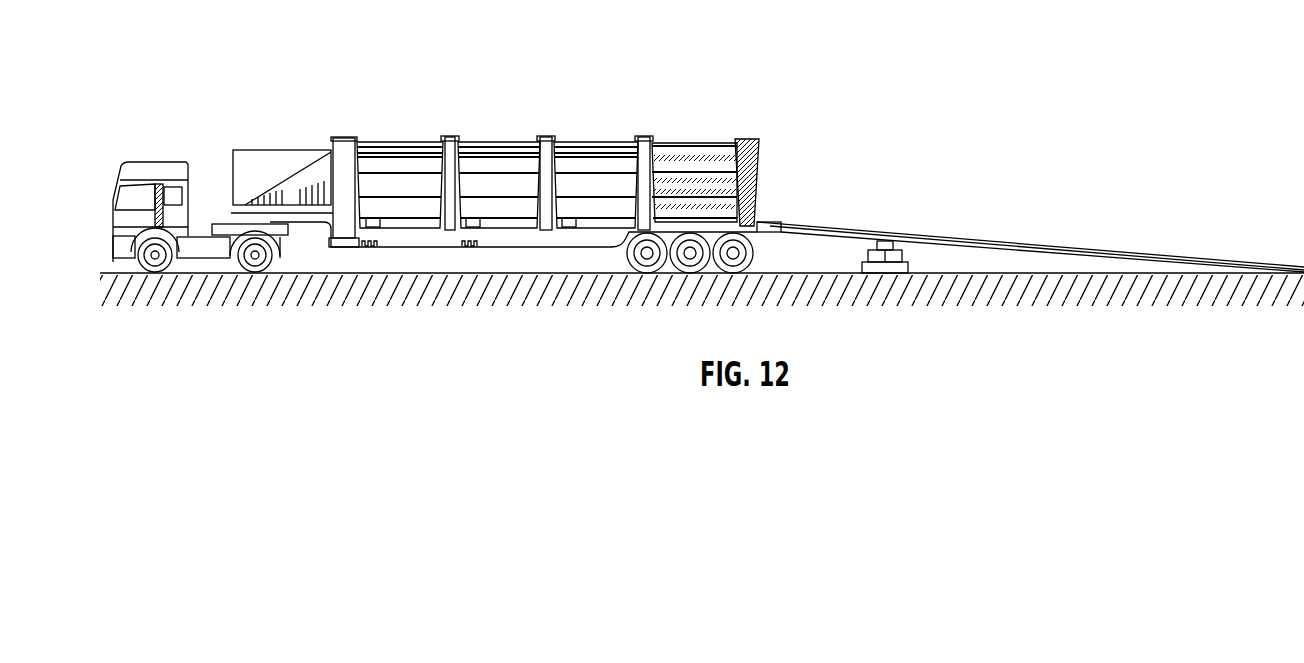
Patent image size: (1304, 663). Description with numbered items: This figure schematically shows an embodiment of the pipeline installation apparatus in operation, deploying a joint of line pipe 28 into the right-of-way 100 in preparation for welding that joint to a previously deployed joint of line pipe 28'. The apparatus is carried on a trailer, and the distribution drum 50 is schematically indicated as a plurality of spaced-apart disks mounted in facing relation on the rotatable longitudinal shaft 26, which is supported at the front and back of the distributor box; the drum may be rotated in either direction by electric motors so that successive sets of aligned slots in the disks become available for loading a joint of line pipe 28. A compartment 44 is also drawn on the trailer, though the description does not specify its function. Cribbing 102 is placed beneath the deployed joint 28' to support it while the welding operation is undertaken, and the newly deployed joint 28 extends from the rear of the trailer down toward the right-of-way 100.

The right-of-way 100 is at (820, 58).
The storage compartment 44 is at (283, 148).
The distribution drum 50 is at (500, 148).
The longitudinal shaft 26 is at (580, 185).
The joint of line pipe 28 is at (1030, 282).
The previously deployed joint of line pipe 28' is at (999, 300).
The cribbing 102 is at (888, 268).